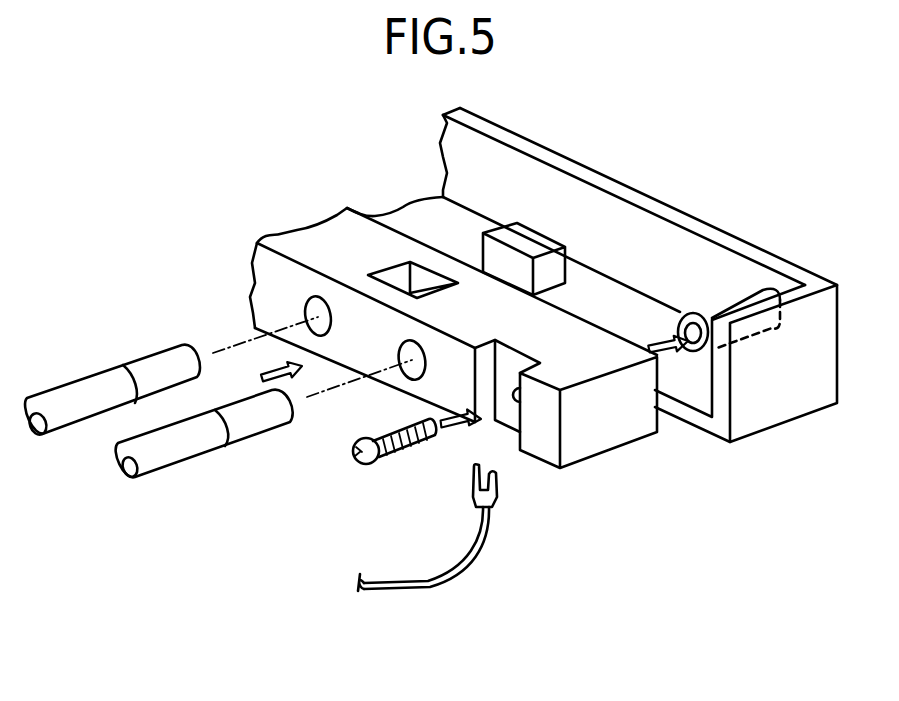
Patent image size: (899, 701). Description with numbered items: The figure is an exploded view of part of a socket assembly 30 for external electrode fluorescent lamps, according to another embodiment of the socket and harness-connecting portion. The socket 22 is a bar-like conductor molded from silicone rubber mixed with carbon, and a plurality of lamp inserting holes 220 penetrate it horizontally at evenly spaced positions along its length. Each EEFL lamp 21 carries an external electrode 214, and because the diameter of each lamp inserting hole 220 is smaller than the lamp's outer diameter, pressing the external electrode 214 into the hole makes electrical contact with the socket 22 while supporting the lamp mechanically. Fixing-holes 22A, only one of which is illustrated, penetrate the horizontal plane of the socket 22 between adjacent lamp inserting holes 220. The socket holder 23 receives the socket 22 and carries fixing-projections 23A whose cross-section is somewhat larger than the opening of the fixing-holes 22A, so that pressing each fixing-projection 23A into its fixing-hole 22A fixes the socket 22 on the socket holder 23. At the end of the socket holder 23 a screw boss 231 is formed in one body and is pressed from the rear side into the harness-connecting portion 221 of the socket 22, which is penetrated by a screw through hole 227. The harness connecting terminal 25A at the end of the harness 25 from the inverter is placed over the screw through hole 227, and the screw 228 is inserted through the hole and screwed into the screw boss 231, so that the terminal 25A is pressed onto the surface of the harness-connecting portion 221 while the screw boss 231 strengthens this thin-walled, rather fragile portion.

The EEFL lamp 21 is at (87, 390).
The external electrode 214 is at (160, 362).
The lamp inserting hole 220 is at (410, 340).
The socket 22 is at (637, 433).
The fixing-hole 22A is at (427, 295).
The harness-connecting portion 221 is at (503, 418).
The screw through hole 227 is at (510, 392).
The screw 228 is at (395, 453).
The socket holder 23 is at (767, 420).
The fixing-projection 23A is at (538, 243).
The screw boss 231 is at (702, 316).
The harness 25 is at (463, 583).
The harness connecting terminal 25A is at (468, 477).
The socket assembly 30 is at (780, 490).